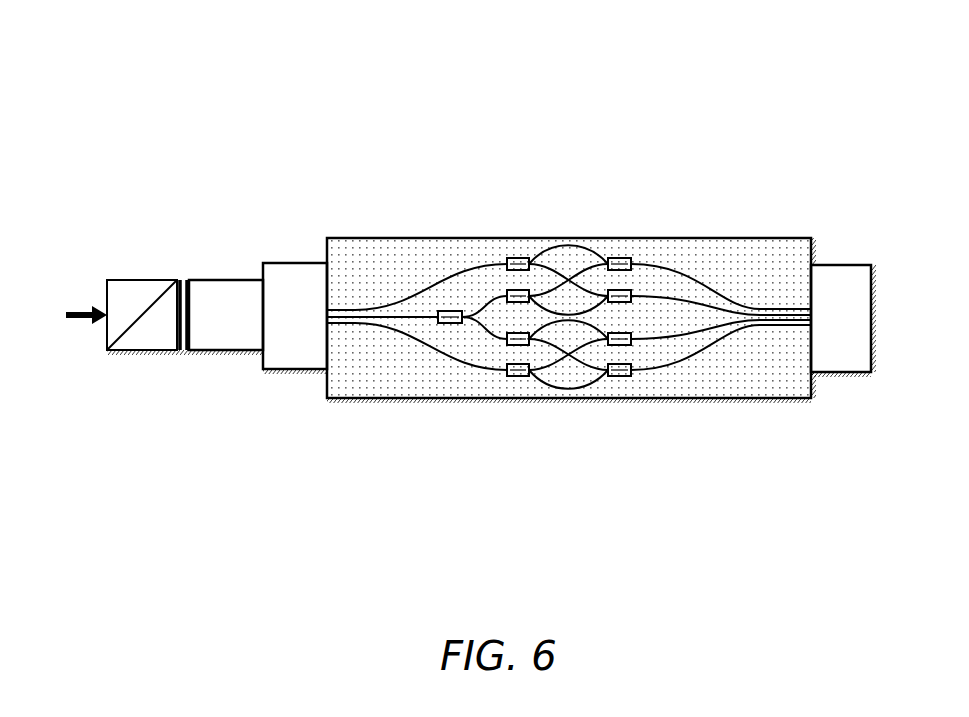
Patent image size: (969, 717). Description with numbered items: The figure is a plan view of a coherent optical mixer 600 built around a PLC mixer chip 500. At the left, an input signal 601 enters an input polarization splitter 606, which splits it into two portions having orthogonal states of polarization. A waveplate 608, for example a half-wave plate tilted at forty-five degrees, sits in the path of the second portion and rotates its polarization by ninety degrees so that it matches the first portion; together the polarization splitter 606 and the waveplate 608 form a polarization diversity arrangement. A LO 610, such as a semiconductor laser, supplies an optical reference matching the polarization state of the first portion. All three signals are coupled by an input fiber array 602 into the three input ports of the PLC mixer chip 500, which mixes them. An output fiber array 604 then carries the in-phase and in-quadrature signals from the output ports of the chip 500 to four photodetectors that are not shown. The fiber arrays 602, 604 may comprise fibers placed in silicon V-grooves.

The coherent optical mixer 600 is at (574, 118).
The PLC mixer chip 500 is at (672, 232).
The input signal 601 is at (70, 312).
The input fiber array 602 is at (293, 374).
The output fiber array 604 is at (835, 374).
The input polarization splitter 606 is at (132, 352).
The waveplate 608 is at (183, 352).
The LO 610 is at (232, 352).